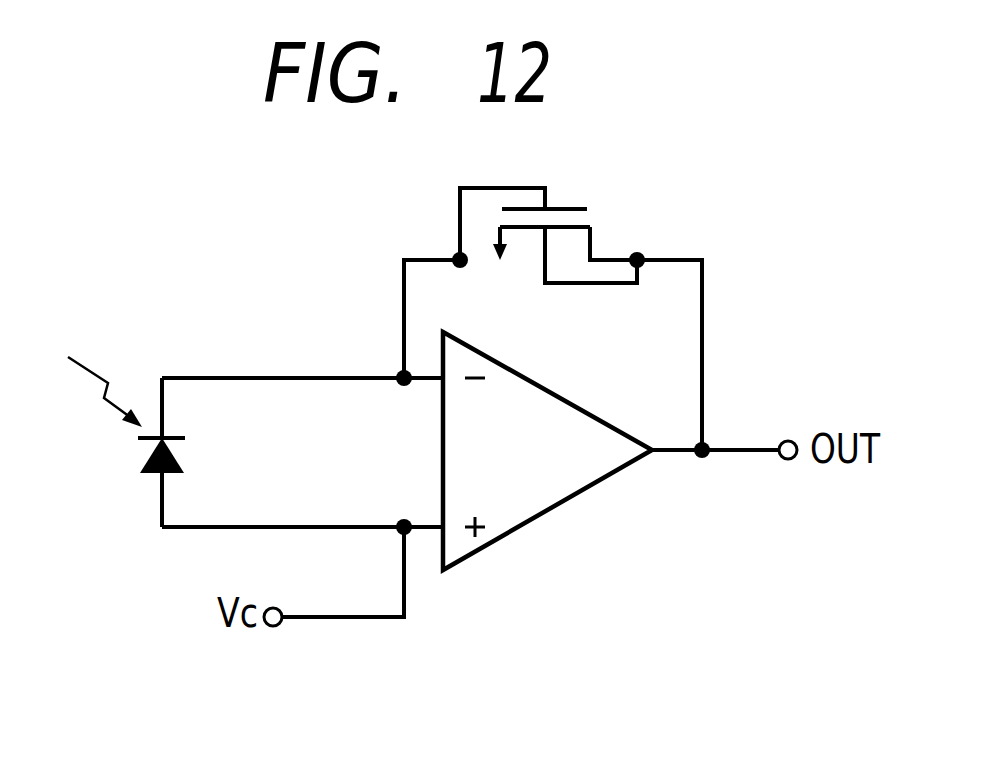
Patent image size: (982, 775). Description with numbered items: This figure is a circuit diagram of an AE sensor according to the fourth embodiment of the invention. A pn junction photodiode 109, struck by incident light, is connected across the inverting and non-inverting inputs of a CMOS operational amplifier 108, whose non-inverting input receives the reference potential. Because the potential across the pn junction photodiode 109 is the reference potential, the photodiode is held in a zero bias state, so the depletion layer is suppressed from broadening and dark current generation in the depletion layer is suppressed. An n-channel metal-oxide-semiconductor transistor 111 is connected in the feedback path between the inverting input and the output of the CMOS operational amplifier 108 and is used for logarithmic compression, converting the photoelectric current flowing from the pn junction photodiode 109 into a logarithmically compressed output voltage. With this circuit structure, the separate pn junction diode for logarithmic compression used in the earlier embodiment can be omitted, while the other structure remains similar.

The CMOS operational amplifier 108 is at (560, 500).
The pn junction photodiode 109 is at (138, 455).
The NMOS transistor 111 is at (513, 275).